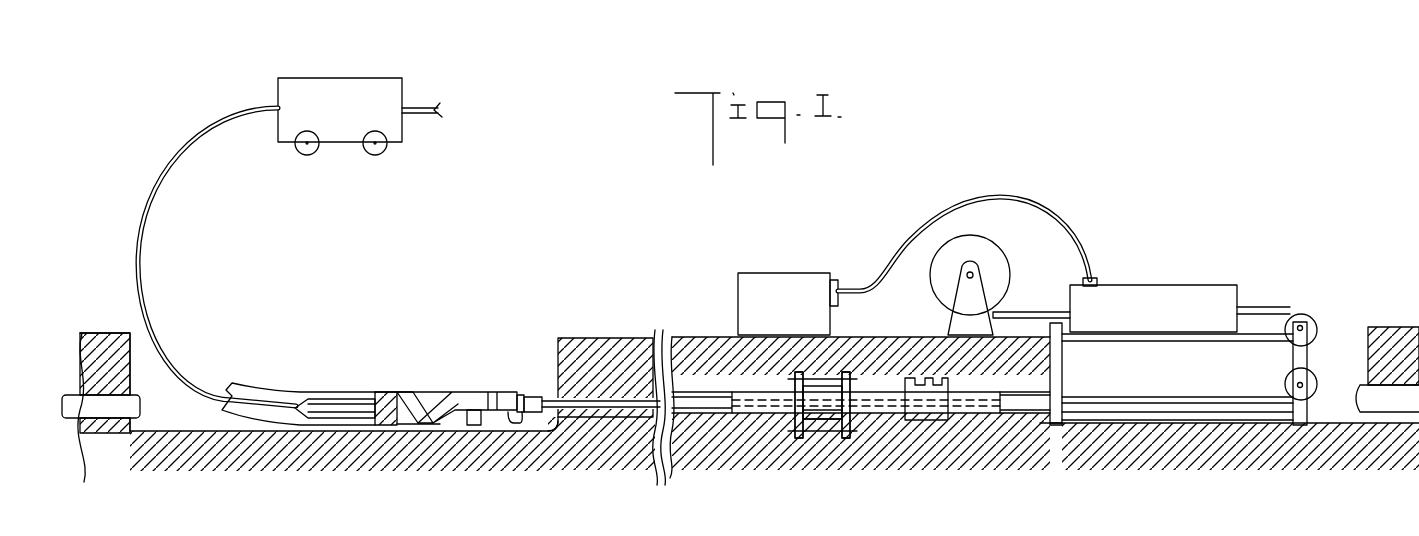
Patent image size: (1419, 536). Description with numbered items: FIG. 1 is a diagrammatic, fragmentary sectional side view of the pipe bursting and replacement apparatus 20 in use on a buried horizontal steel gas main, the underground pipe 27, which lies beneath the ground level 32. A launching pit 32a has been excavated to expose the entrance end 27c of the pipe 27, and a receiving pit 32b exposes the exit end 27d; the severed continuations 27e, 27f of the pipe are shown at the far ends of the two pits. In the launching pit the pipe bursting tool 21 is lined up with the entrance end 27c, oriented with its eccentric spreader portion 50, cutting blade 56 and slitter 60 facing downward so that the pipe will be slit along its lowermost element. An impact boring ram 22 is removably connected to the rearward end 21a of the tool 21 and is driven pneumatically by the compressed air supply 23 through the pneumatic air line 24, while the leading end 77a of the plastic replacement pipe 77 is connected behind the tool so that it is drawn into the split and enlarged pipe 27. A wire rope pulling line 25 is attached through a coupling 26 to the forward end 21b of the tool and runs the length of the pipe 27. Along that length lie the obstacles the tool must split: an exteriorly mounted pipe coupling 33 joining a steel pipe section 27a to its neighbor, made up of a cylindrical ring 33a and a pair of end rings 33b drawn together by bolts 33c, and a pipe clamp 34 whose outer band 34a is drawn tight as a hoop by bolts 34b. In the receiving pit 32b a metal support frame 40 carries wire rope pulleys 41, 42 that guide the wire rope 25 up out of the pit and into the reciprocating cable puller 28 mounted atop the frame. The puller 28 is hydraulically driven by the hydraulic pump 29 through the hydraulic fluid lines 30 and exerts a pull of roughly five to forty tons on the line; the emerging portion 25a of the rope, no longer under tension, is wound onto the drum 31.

The pipe bursting and replacement apparatus 20 is at (428, 331).
The pipe bursting tool 21 is at (474, 384).
The rearward end of the tool 21a is at (517, 396).
The forward end of the tool 21b is at (403, 397).
The impact boring ram 22 is at (332, 396).
The compressed air supply 23 is at (352, 122).
The pneumatic air line 24 is at (152, 203).
The wire rope pulling line 25 is at (611, 409).
The emerging portion of wire rope 25a is at (1033, 314).
The coupling 26 is at (535, 393).
The underground pipe 27 is at (707, 436).
The steel pipe section 27a is at (771, 425).
The entrance end of the pipe 27c is at (549, 432).
The exit end of the pipe 27d is at (1047, 430).
The severed continuation of the pipe 27e is at (105, 412).
The severed continuation of the pipe 27f is at (1391, 404).
The reciprocating cable puller 28 is at (1167, 320).
The hydraulic pump 29 is at (794, 316).
The hydraulic fluid lines 30 is at (1068, 222).
The drum 31 is at (994, 270).
The ground level 32 is at (605, 334).
The launching pit 32a is at (175, 425).
The receiving pit 32b is at (1363, 334).
The pipe coupling 33 is at (775, 386).
The cylindrical ring 33a is at (812, 440).
The end rings 33b is at (843, 376).
The bolts 33c is at (826, 373).
The pipe clamp 34 is at (939, 419).
The outer band 34a is at (912, 421).
The bolts 34b is at (940, 378).
The metal support frame 40 is at (1074, 372).
The wire rope pulley 41 is at (1286, 379).
The wire rope pulley 42 is at (1295, 314).
The eccentric spreader portion 50 is at (433, 424).
The cutting blade 56 is at (478, 427).
The slitter 60 is at (516, 426).
The plastic replacement pipe 77 is at (288, 378).
The leading end of the replacement pipe 77a is at (392, 397).